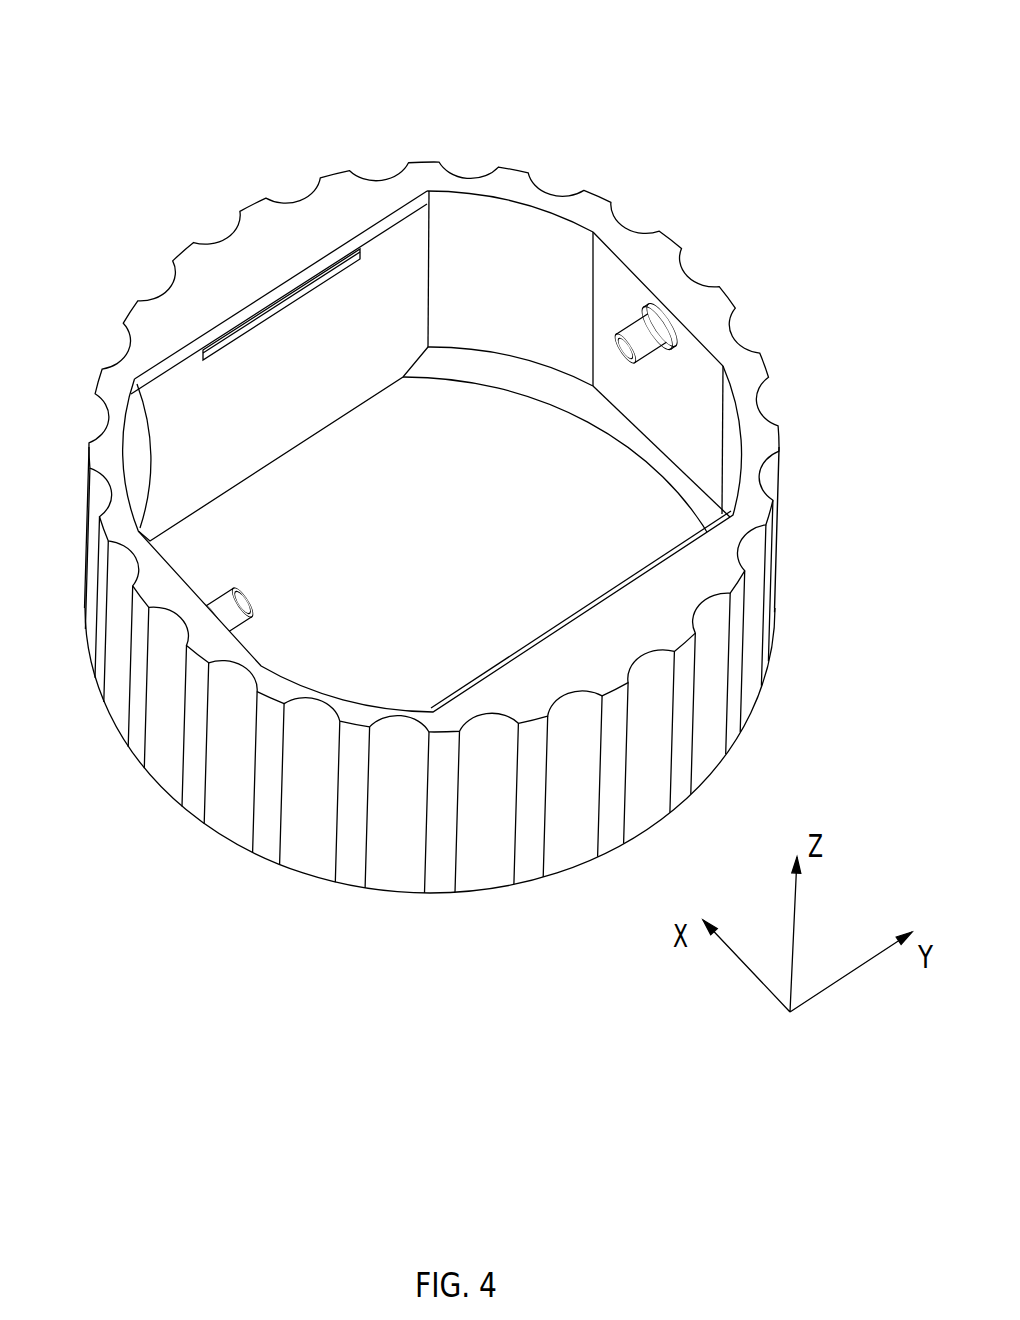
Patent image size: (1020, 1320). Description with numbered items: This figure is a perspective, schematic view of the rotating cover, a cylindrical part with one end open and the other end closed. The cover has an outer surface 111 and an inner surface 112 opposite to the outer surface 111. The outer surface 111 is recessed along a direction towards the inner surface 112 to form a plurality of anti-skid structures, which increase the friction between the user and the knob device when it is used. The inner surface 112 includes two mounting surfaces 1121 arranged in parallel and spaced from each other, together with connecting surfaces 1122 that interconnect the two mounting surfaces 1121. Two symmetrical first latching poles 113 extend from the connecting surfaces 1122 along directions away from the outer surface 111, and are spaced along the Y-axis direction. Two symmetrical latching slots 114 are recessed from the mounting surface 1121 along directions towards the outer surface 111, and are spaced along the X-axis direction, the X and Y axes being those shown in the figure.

The outer surface 111 is at (352, 790).
The inner surface 112 is at (598, 67).
The mounting surface 1121 is at (330, 362).
The connecting surface 1122 is at (556, 320).
The first latching pole 113 is at (643, 337).
The latching slot 114 is at (225, 344).